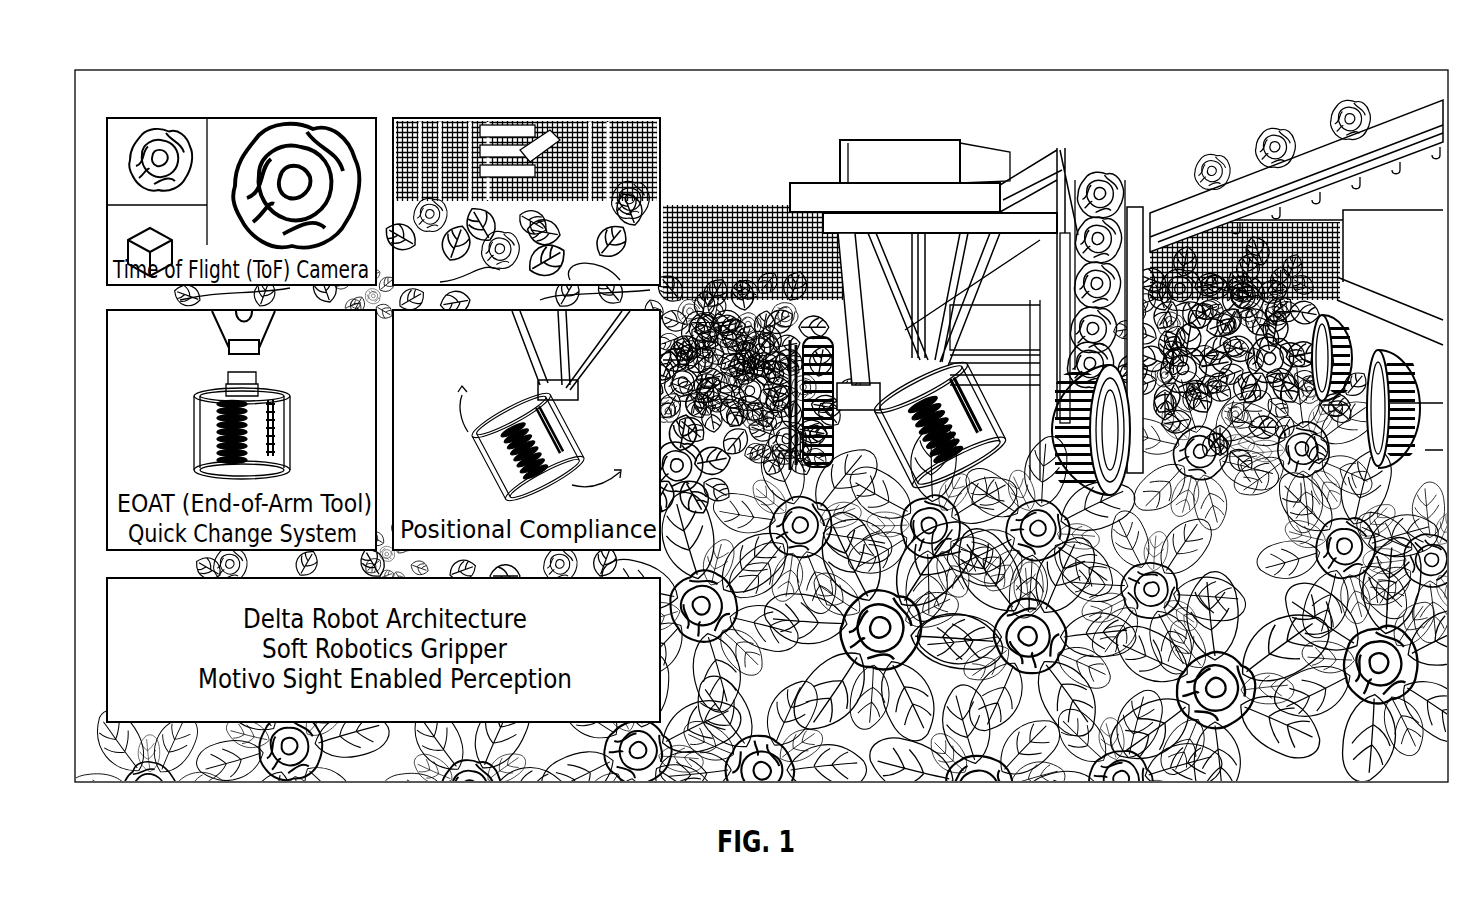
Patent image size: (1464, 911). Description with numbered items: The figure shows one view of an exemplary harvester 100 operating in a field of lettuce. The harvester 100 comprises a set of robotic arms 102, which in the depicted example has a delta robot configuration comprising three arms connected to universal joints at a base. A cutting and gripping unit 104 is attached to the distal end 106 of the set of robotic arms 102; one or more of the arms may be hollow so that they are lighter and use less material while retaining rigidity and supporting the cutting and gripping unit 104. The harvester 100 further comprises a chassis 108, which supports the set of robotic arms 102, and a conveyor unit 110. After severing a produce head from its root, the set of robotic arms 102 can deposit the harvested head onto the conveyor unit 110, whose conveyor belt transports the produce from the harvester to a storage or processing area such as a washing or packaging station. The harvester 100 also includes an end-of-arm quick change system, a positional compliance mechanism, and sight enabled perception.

The harvester 100 is at (870, 124).
The set of robotic arms 102 is at (930, 235).
The cutting and gripping unit 104 is at (980, 385).
The distal end 106 is at (922, 362).
The chassis 108 is at (845, 332).
The conveyor unit 110 is at (1245, 182).